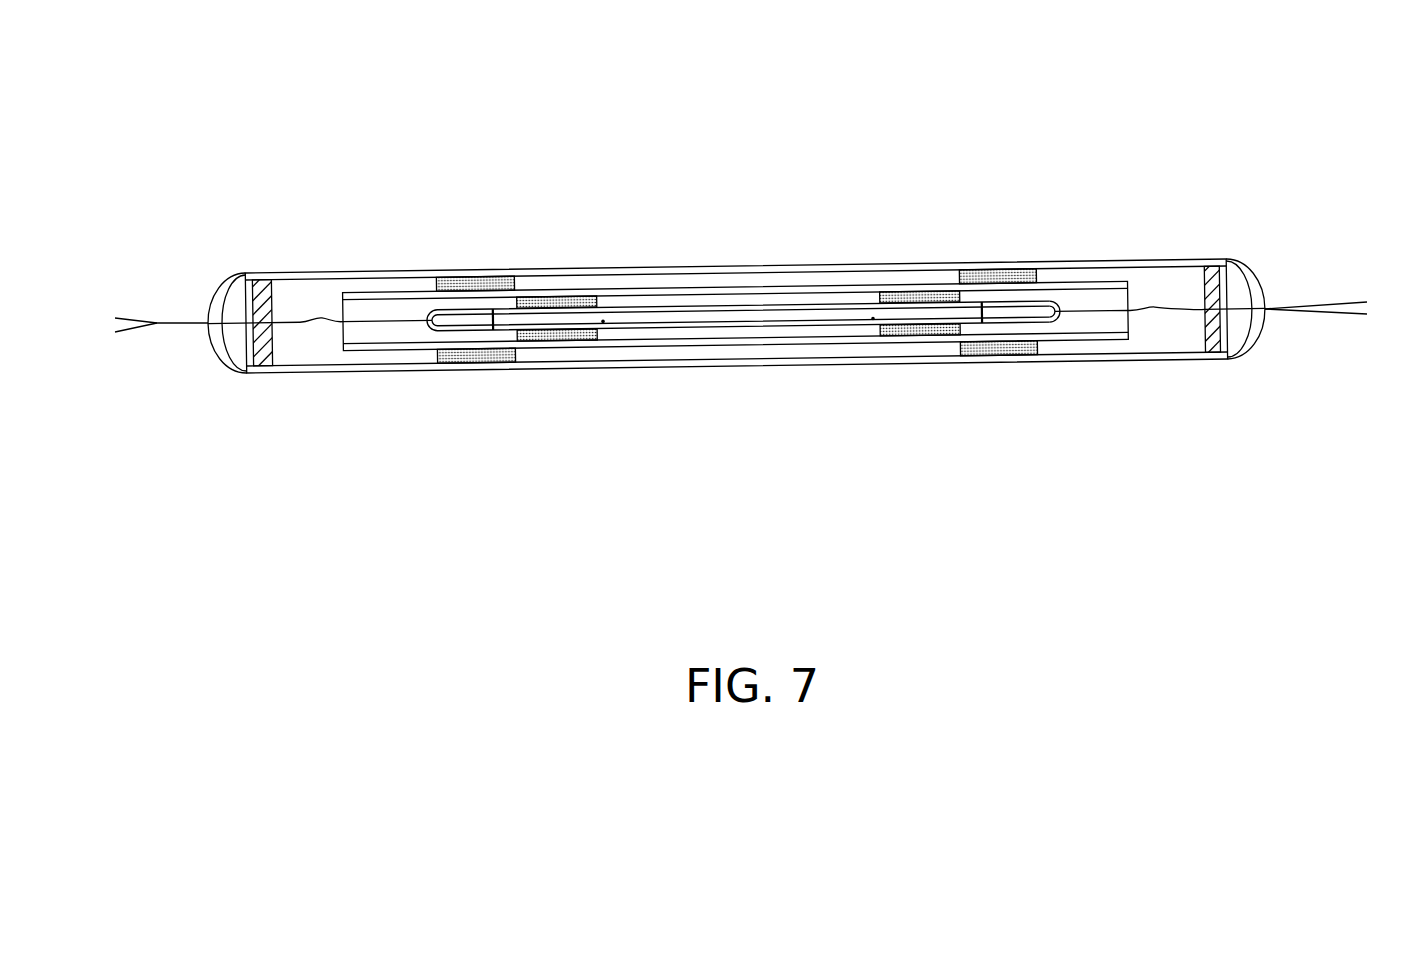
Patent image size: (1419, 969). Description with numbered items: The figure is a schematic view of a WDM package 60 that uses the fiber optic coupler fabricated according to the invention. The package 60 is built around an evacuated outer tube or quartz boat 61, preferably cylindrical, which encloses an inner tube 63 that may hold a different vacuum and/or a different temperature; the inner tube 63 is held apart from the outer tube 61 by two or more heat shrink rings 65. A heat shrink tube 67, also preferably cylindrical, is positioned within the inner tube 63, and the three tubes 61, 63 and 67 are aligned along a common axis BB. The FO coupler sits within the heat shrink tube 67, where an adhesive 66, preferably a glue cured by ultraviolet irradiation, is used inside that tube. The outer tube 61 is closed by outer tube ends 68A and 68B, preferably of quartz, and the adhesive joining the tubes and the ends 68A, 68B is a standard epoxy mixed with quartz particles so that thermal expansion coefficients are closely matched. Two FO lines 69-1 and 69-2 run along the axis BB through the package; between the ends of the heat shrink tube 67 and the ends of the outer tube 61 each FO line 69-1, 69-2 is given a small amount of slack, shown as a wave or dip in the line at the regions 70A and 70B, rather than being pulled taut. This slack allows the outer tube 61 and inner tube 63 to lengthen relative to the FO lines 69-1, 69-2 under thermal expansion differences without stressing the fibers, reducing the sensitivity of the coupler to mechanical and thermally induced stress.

The WDM package 60 is at (744, 276).
The outer tube 61 is at (345, 275).
The inner tube 63 is at (473, 300).
The heat shrink rings 65 is at (572, 342).
The adhesive 66 is at (873, 327).
The heat shrink tube 67 is at (1053, 317).
The outer tube end 68A is at (233, 283).
The outer tube end 68B is at (1255, 342).
The FO line 69-1 is at (157, 322).
The FO line 69-2 is at (157, 325).
The first fiber lead-in portion 70A is at (318, 330).
The second fiber lead-in portion 70B is at (1156, 330).